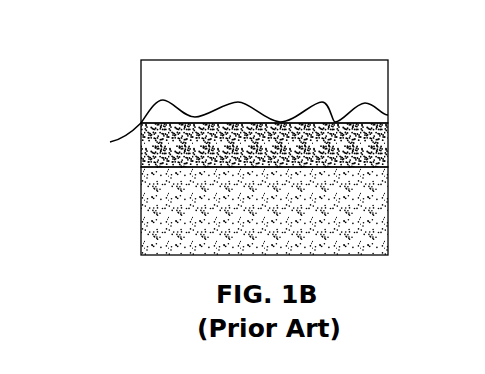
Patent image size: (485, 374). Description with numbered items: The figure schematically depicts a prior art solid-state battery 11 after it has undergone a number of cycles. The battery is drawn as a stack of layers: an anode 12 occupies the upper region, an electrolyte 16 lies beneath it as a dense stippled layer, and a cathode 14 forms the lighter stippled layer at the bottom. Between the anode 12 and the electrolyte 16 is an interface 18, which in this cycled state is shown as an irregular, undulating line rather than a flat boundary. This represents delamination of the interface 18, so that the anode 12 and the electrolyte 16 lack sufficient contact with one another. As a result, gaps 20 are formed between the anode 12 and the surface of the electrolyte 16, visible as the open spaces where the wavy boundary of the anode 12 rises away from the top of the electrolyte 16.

The prior art solid-state battery after cycling 11 is at (97, 36).
The anode 12 is at (381, 94).
The cathode 14 is at (372, 220).
The electrolyte 16 is at (381, 151).
The interface 18 is at (234, 129).
The gaps 20 is at (219, 120).